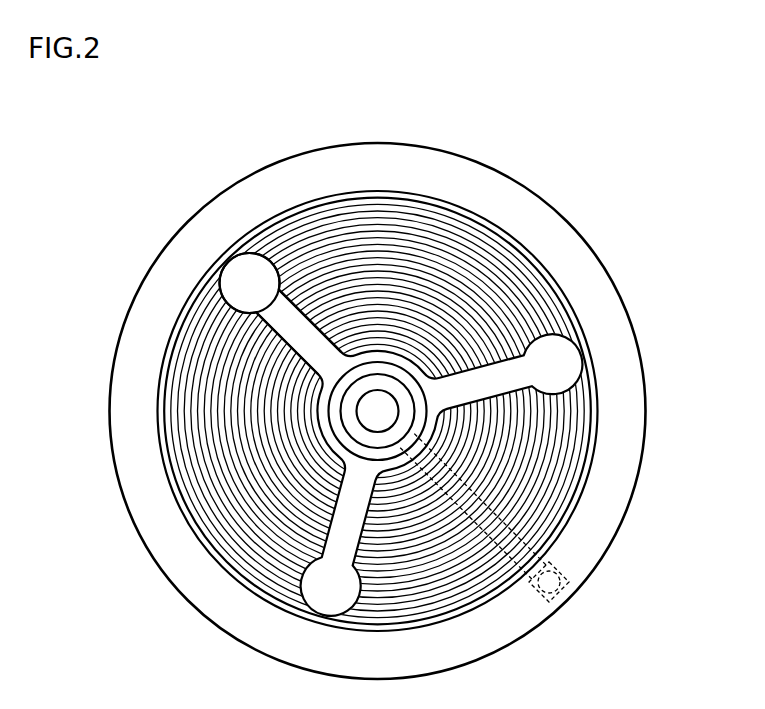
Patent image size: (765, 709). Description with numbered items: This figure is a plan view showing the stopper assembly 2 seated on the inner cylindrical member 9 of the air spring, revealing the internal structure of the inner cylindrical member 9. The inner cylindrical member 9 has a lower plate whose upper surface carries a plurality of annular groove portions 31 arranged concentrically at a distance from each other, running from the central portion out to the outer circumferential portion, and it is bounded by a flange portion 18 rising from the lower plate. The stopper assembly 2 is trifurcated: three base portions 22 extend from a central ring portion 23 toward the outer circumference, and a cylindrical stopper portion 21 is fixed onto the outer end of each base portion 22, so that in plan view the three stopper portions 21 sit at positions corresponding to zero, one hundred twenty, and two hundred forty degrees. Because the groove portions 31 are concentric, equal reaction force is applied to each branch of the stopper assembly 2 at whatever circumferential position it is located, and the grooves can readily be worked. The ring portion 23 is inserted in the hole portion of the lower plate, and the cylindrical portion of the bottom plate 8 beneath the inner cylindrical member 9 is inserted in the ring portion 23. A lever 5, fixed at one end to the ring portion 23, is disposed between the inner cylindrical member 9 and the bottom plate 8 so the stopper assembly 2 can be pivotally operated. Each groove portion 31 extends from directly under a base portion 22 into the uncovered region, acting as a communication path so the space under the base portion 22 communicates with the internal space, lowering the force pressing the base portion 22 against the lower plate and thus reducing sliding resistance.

The stopper assembly 2 is at (358, 99).
The stopper portion 21 is at (252, 268).
The base portion 22 is at (300, 325).
The ring portion 23 is at (368, 367).
The groove portion 31 is at (213, 412).
The flange portion 18 is at (200, 543).
The inner cylindrical member 9 is at (622, 352).
The bottom plate 8 is at (408, 408).
The lever 5 is at (533, 580).